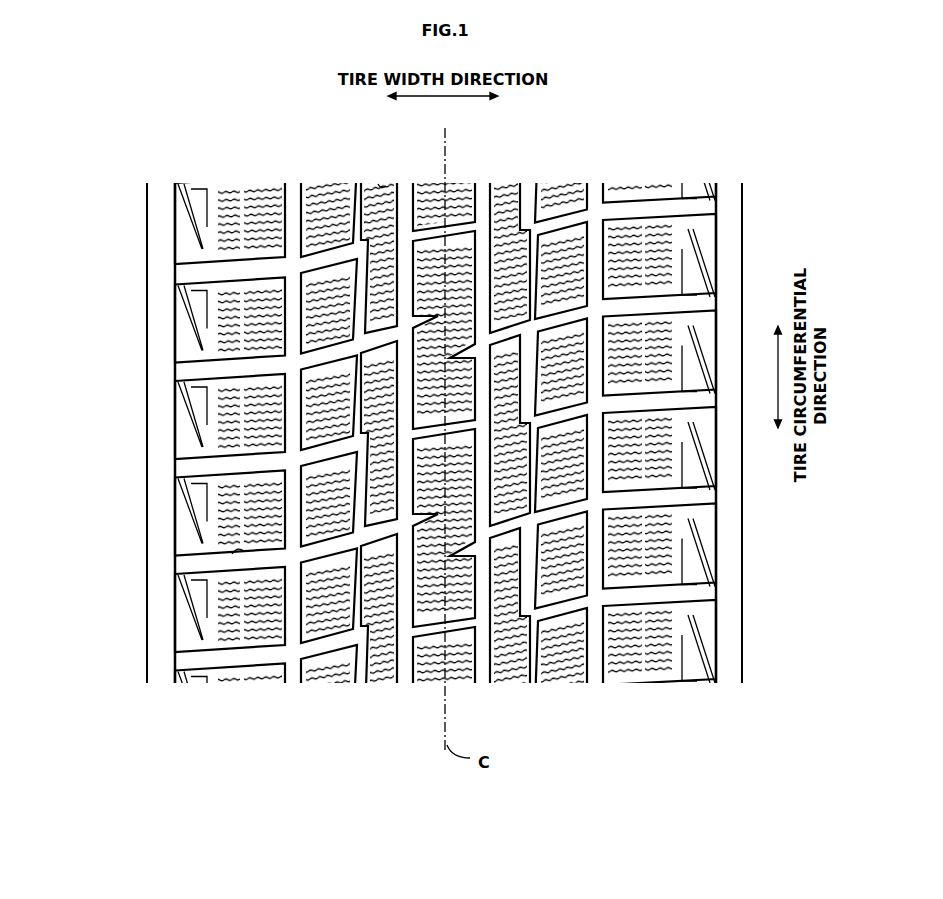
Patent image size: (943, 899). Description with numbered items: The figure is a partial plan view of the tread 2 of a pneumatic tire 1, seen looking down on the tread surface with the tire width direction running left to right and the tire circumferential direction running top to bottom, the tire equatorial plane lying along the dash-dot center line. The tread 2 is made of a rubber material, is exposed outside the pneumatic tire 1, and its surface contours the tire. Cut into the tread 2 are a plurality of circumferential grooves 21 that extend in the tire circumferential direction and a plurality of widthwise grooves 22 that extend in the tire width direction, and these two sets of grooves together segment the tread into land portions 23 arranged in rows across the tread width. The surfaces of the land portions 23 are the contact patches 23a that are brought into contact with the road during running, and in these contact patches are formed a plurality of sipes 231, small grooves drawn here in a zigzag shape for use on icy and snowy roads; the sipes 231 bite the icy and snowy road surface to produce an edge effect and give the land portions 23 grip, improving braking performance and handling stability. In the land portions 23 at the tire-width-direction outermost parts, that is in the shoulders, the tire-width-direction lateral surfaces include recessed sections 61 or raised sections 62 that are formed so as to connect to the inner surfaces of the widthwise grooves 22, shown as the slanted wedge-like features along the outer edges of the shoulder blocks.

The pneumatic tire 1 is at (712, 108).
The tread 2 is at (569, 178).
The circumferential grooves 21 is at (293, 684).
The widthwise grooves 22 is at (192, 272).
The land portions 23 is at (438, 684).
The contact patches 23a is at (222, 482).
The sipes 231 is at (240, 551).
The recessed sections 61 is at (202, 393).
The raised sections 62 is at (186, 442).